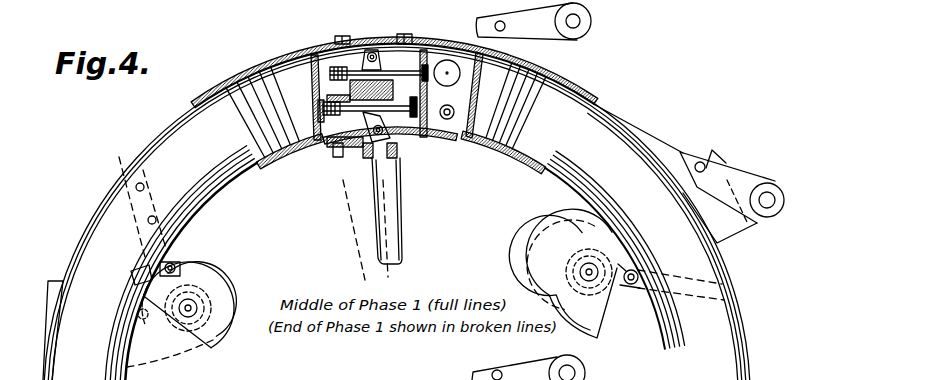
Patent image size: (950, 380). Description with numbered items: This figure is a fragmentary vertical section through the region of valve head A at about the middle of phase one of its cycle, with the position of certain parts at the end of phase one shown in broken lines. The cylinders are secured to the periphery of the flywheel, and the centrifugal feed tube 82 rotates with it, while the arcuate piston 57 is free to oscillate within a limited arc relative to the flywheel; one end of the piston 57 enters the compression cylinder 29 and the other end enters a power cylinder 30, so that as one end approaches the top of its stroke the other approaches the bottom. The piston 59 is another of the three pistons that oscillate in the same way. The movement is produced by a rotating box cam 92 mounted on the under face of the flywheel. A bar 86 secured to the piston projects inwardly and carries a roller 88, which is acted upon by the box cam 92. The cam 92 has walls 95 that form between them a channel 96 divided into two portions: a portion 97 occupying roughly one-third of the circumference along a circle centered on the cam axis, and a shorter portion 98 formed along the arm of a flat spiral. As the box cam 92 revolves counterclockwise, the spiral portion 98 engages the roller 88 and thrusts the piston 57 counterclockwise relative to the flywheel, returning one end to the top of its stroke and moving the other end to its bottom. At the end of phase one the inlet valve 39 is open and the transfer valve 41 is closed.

The compression cylinder 29 is at (290, 164).
The power cylinder 30 is at (501, 148).
The inlet valve 39 is at (341, 157).
The transfer valve 41 is at (387, 67).
The piston 57 is at (183, 133).
The piston 59 is at (565, 171).
The centrifugal feed tube 82 is at (400, 203).
The bar 86 is at (128, 169).
The roller 88 is at (175, 262).
The box cam 92 is at (211, 345).
The walls 95 is at (214, 323).
The channel 96 is at (203, 277).
The circular portion of channel 97 is at (223, 293).
The spiral portion of channel 98 is at (147, 265).